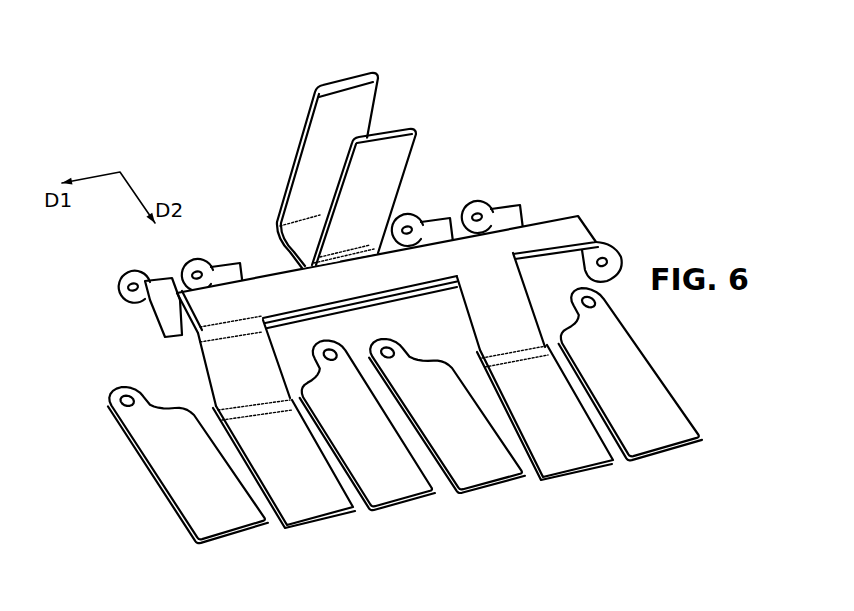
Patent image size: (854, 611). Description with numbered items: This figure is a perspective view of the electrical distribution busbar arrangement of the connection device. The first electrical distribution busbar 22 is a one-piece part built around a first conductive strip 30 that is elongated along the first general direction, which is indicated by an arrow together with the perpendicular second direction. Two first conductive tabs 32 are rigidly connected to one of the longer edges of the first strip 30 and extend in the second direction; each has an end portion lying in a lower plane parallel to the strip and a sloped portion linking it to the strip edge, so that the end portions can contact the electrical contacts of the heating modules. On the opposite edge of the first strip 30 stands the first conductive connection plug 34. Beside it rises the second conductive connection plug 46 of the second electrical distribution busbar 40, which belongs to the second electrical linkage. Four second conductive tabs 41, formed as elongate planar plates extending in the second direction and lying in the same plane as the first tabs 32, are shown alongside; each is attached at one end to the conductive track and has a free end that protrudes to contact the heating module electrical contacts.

The first electrical distribution busbar 22 is at (370, 247).
The first conductive strip 30 is at (560, 230).
The first conductive tabs 32 is at (307, 500).
The first conductive connection plug 34 is at (390, 167).
The second electrical distribution busbar 40 is at (342, 165).
The second conductive tabs 41 is at (222, 515).
The second conductive connection plug 46 is at (360, 108).